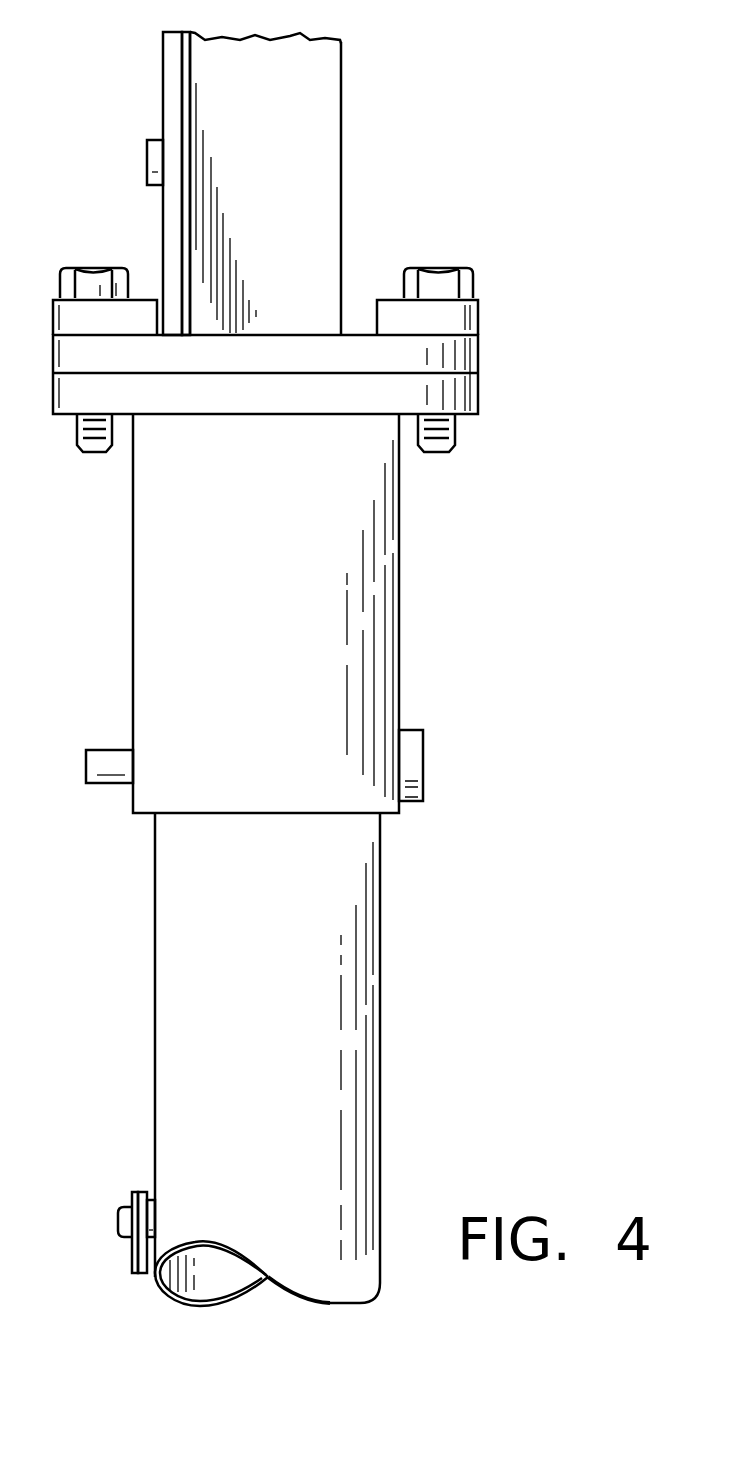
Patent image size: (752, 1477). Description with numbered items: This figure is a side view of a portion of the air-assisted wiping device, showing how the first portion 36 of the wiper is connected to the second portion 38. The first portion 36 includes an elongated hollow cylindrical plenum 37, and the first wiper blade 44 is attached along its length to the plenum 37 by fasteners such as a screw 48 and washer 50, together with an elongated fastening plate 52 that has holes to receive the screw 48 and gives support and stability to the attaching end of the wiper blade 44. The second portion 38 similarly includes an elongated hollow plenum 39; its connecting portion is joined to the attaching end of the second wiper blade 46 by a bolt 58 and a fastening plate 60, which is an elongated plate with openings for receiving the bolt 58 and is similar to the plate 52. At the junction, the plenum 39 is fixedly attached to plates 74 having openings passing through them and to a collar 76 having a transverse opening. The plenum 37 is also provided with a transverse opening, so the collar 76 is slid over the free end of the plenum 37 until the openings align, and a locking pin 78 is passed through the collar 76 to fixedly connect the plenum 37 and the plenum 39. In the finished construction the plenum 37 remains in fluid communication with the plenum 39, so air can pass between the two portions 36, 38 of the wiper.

The first portion 36 is at (395, 1067).
The plenum 37 is at (298, 1242).
The second portion 38 is at (322, 102).
The plenum 39 is at (320, 188).
The first wiper blade 44 is at (146, 1190).
The second wiper blade 46 is at (186, 31).
The screw 48 is at (120, 1222).
The washer 50 is at (153, 1218).
The fastening plate 52 is at (128, 1252).
The bolt 58 is at (147, 162).
The fastening plate 60 is at (172, 77).
The plates 74 is at (494, 362).
The collar 76 is at (173, 583).
The locking pin 78 is at (413, 755).